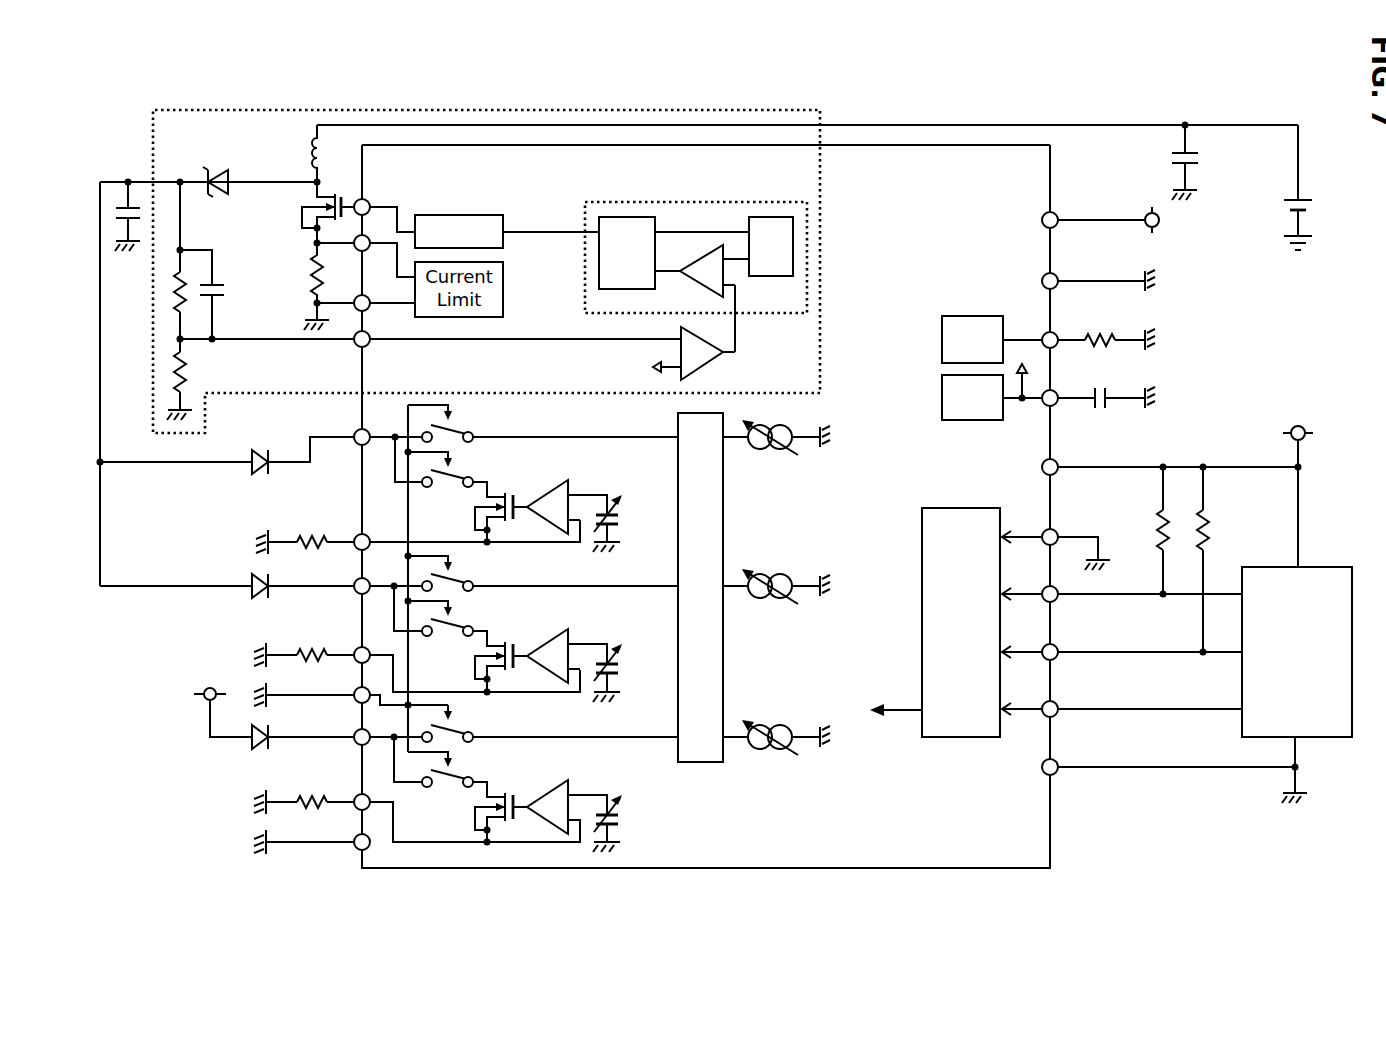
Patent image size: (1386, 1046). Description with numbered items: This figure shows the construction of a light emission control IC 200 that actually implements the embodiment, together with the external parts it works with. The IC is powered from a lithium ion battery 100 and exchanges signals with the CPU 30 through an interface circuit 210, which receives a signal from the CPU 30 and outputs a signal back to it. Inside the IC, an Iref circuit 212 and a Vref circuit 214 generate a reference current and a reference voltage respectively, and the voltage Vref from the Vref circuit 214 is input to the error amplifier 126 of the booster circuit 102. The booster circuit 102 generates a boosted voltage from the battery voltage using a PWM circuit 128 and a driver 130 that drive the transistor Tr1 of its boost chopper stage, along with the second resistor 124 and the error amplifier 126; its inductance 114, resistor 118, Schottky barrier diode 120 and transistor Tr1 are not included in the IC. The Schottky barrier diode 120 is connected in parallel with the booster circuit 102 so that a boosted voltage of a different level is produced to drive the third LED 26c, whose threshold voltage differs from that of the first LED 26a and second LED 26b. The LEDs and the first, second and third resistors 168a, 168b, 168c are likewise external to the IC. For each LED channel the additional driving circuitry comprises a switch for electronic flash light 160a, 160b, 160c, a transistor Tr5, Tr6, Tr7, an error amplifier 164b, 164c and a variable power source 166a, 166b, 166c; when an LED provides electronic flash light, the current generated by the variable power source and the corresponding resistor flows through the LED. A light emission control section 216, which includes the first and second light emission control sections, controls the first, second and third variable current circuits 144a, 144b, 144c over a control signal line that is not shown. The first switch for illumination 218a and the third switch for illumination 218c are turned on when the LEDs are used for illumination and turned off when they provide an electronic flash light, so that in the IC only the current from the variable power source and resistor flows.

The booster circuit 102 is at (154, 151).
The Schottky barrier diode 120 is at (219, 170).
The inductance 114 is at (310, 150).
The transistor Tr1 is at (302, 201).
The resistor 118 is at (306, 272).
The second resistor 124 is at (195, 366).
The driver 130 is at (458, 215).
The PWM circuit 128 is at (694, 203).
The error amplifier 126 is at (706, 368).
The first LED 26a is at (257, 448).
The second LED 26b is at (258, 600).
The third LED 26c is at (258, 751).
The first resistor 168a is at (312, 533).
The second resistor 168b is at (312, 646).
The third resistor 168c is at (312, 796).
The first switch for illumination 218a is at (460, 420).
The third switch for illumination 218c is at (460, 720).
The first switch for electronic flash light 160a is at (460, 465).
The second switch for electronic flash light 160b is at (460, 614).
The third switch for electronic flash light 160c is at (460, 765).
The transistor Tr5 is at (473, 505).
The transistor Tr6 is at (473, 655).
The transistor Tr7 is at (473, 806).
The second error amplifier 164b is at (545, 481).
The third error amplifier 164c is at (545, 781).
The first variable power source 166a is at (620, 520).
The second variable power source 166b is at (620, 669).
The third variable power source 166c is at (622, 818).
The light emission control section 216 is at (700, 764).
The first variable current circuit 144a is at (772, 455).
The second variable current circuit 144b is at (772, 604).
The third variable current circuit 144c is at (772, 755).
The Iref circuit 212 is at (940, 340).
The Vref circuit 214 is at (940, 398).
The interface circuit 210 is at (959, 507).
The central processing unit (CPU) 30 is at (1320, 567).
The lithium ion battery 100 is at (1283, 204).
The light emission control IC 200 is at (700, 909).